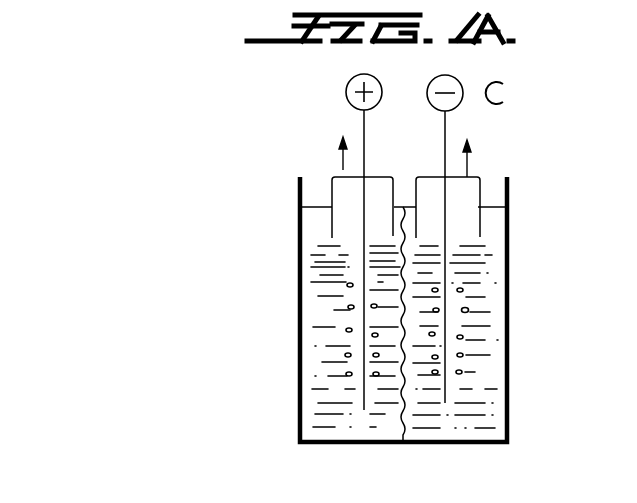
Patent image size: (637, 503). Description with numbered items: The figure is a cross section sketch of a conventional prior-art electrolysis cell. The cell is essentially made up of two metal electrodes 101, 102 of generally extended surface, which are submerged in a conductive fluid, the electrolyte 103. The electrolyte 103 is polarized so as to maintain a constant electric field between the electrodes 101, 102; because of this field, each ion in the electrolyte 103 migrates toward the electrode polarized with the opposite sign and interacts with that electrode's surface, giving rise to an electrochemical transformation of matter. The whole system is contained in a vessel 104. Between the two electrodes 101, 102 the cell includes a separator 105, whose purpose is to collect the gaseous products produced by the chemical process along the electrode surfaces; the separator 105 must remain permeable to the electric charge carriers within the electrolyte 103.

The metal electrode 101 is at (362, 218).
The metal electrode 102 is at (444, 215).
The conductive fluid (electrolyte) 103 is at (480, 372).
The vessel 104 is at (298, 387).
The separator 105 is at (403, 398).